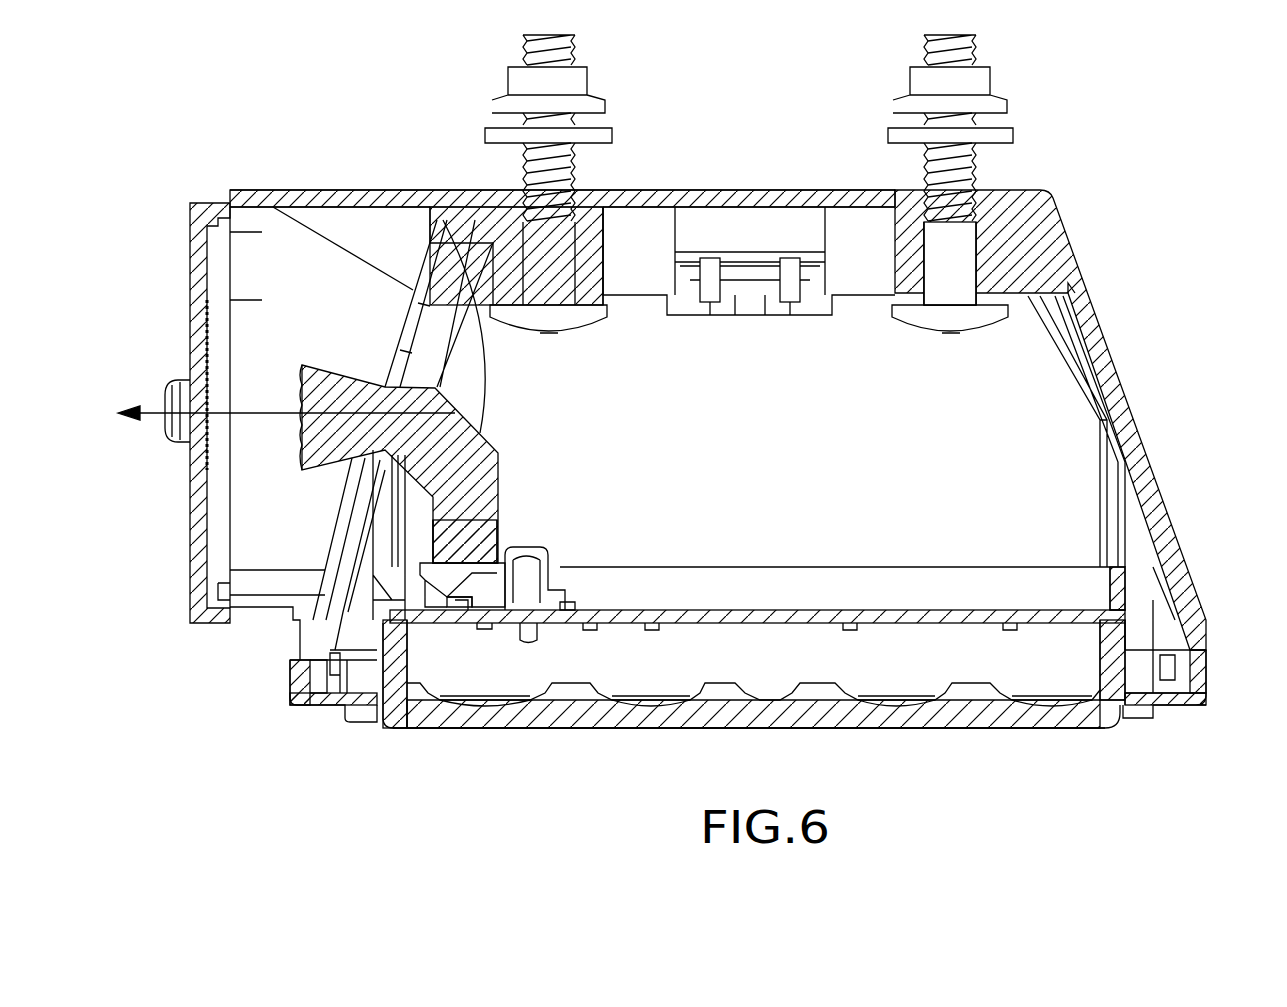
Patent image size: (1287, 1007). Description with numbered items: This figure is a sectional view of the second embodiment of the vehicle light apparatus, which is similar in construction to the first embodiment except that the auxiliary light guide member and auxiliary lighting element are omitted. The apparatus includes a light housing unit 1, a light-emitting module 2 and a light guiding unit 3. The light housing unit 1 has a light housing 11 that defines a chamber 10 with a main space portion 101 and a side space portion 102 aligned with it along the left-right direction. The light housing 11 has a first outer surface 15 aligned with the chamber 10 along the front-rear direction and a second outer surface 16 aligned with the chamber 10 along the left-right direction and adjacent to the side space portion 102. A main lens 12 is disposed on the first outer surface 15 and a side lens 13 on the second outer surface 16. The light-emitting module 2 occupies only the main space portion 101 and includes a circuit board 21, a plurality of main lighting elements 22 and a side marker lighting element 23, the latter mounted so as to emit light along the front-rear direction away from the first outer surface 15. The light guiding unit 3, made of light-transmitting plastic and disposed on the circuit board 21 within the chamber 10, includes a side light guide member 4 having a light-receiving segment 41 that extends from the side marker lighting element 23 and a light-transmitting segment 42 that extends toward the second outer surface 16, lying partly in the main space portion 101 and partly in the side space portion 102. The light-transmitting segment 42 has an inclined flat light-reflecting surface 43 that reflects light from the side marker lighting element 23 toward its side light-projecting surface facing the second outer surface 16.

The light housing unit 1 is at (1190, 704).
The light-emitting module 2 is at (467, 624).
The light guiding unit 3 is at (266, 500).
The side light guide member 4 is at (445, 520).
The chamber 10 is at (995, 408).
The light housing 11 is at (1100, 297).
The main lens 12 is at (1025, 738).
The side lens 13 is at (205, 245).
The first outer surface 15 is at (850, 732).
The second outer surface 16 is at (192, 468).
The circuit board 21 is at (563, 618).
The main lighting elements 22 is at (652, 630).
The side marker lighting element 23 is at (440, 614).
The light-receiving segment 41 is at (331, 476).
The light-transmitting segment 42 is at (320, 385).
The light-reflecting surface 43 is at (452, 296).
The main space portion 101 is at (1030, 470).
The side space portion 102 is at (268, 283).